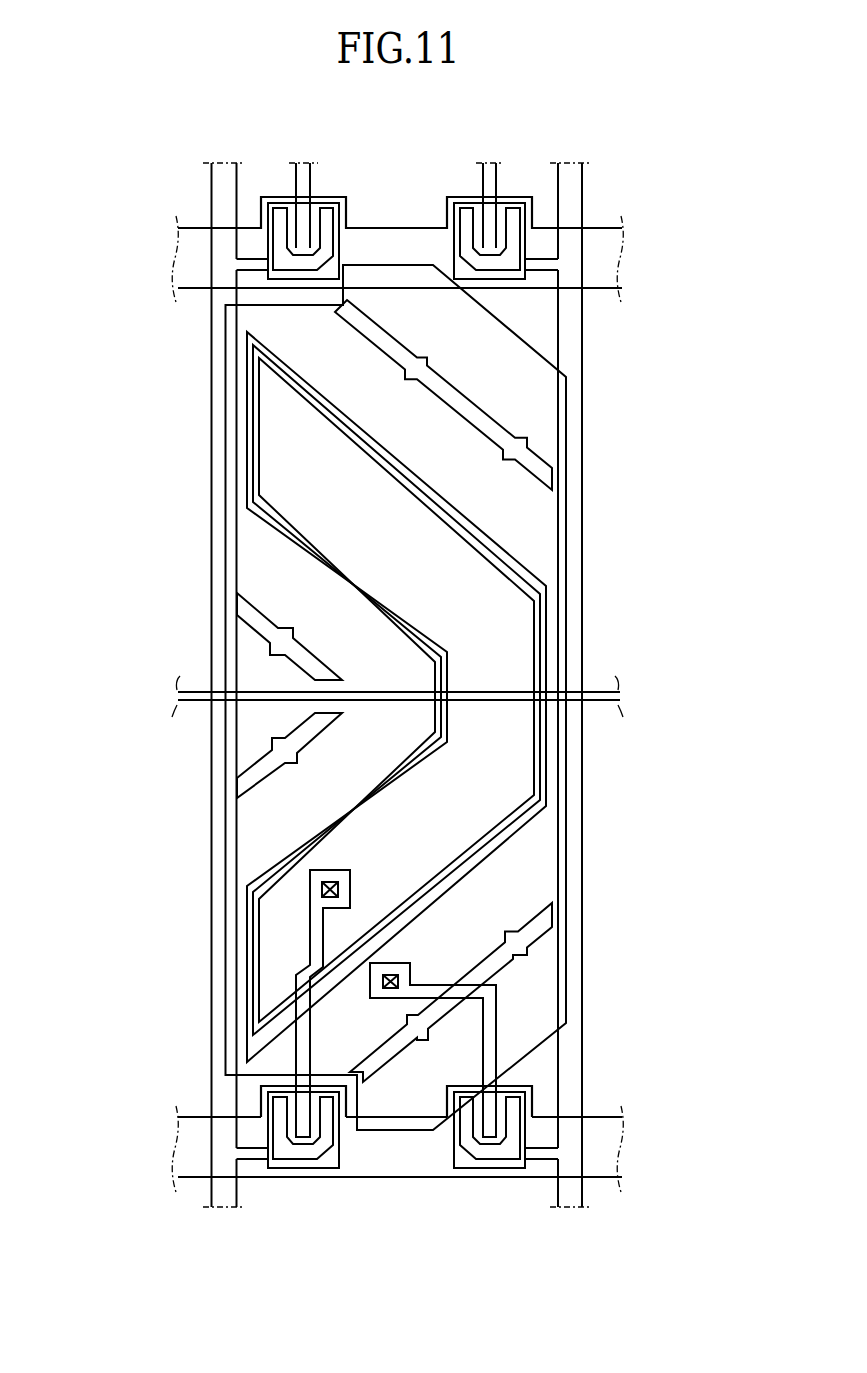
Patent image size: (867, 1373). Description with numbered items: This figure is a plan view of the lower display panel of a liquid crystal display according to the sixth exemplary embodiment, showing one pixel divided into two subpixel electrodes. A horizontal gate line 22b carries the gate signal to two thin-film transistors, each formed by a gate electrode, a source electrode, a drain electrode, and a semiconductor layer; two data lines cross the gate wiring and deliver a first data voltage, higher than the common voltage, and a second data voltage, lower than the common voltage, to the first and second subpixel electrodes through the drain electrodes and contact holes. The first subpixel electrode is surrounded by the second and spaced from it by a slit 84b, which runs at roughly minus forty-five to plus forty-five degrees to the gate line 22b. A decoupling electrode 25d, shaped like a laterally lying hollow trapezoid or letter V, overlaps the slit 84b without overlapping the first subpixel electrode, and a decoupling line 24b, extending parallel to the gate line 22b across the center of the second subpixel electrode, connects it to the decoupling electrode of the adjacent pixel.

The gate line 22b is at (193, 1162).
The decoupling line 24b is at (603, 702).
The decoupling electrode 25d is at (547, 617).
The slit 84b is at (547, 647).